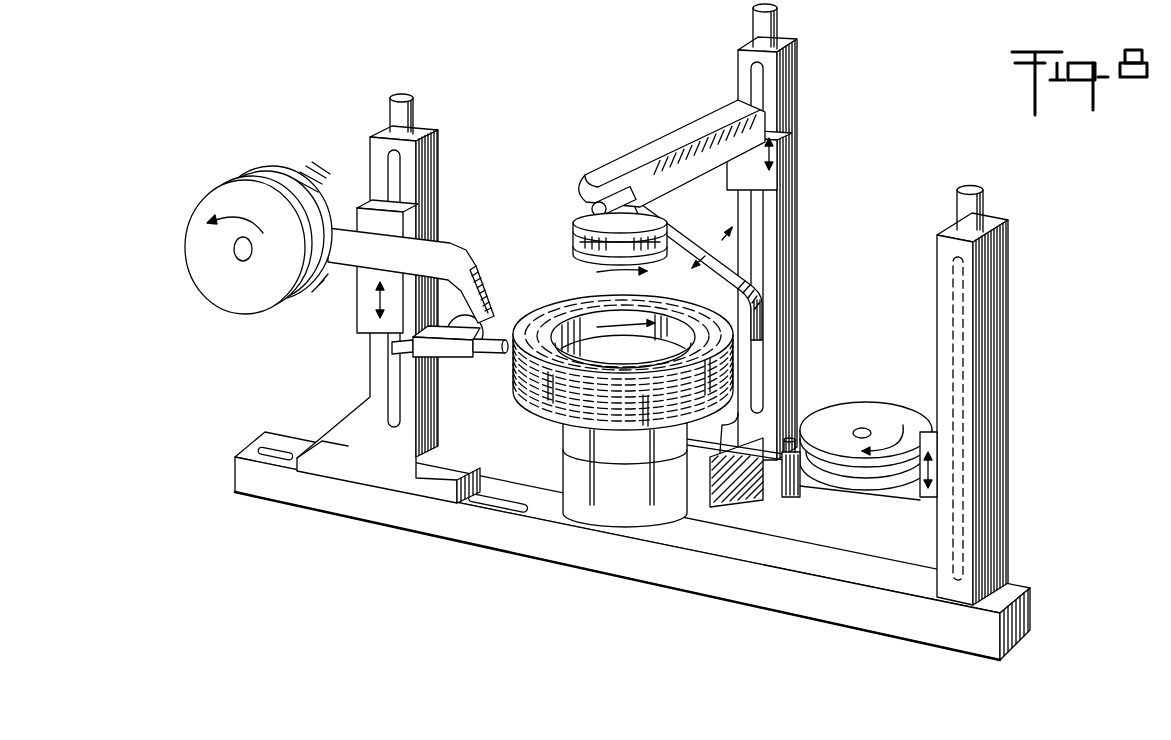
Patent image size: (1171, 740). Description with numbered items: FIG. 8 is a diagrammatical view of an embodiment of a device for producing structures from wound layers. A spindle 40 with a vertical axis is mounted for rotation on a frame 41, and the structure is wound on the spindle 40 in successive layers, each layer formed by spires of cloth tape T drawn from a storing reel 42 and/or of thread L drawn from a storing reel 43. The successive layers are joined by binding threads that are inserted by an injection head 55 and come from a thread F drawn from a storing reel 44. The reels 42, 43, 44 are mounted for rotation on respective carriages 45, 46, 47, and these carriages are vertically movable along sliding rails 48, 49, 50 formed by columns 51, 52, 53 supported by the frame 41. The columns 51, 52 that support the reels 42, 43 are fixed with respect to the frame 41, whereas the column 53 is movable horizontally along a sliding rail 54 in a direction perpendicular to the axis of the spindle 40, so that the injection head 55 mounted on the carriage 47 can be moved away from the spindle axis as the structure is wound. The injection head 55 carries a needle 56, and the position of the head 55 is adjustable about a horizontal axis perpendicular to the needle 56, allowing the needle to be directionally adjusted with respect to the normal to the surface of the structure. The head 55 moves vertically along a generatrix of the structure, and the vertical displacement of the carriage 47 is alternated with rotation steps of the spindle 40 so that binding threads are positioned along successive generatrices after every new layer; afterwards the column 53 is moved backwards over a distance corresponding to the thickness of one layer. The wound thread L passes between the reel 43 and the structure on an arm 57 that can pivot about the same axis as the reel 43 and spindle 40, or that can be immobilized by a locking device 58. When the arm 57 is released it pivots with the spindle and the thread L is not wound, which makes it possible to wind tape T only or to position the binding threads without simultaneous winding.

The spindle 40 is at (557, 320).
The frame 41 is at (715, 573).
The storing reel 42 is at (847, 410).
The storing reel 43 is at (577, 243).
The storing reel 44 is at (213, 277).
The carriage 45 is at (905, 498).
The carriage 46 is at (675, 133).
The carriage 47 is at (462, 255).
The sliding rail 48 is at (952, 338).
The sliding rail 49 is at (763, 78).
The sliding rail 50 is at (392, 160).
The column 51 is at (993, 387).
The column 52 is at (790, 193).
The column 53 is at (427, 192).
The sliding rail 54 is at (503, 507).
The injection head 55 is at (462, 350).
The needle 56 is at (508, 342).
The arm 57 is at (748, 278).
The locking device 58 is at (587, 192).
The thread F is at (330, 320).
The thread L is at (680, 250).
The cloth tape T is at (733, 470).